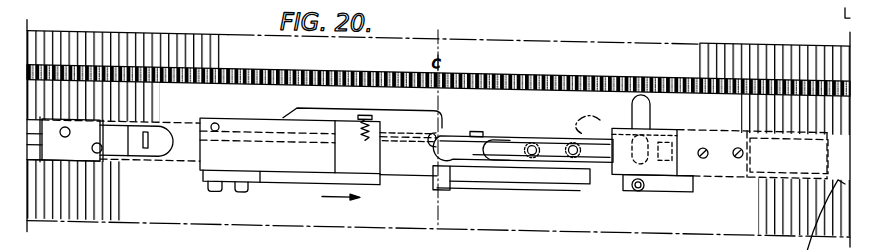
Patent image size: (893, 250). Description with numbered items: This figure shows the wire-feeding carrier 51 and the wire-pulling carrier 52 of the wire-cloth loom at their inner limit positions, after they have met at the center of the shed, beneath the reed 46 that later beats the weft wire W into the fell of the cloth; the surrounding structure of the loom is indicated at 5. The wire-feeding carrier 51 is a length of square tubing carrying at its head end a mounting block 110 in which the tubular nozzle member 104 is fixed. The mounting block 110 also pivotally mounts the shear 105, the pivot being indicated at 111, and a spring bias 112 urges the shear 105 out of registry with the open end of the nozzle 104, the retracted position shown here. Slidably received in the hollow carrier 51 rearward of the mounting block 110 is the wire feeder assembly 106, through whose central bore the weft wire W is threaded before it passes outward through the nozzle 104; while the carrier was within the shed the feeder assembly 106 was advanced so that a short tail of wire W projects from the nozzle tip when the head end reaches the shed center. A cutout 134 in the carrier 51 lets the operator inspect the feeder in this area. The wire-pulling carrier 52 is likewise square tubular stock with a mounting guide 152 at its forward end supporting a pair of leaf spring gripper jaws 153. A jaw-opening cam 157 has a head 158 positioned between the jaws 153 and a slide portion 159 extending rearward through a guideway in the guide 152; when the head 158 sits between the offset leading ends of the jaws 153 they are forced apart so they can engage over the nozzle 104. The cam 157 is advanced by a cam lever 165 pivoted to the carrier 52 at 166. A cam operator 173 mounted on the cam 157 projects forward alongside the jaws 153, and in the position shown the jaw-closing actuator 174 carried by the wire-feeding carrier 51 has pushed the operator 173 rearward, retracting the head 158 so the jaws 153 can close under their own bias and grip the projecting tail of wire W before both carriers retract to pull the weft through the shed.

The frame 5 is at (695, 57).
The reed 46 is at (438, 65).
The wire-feeding carrier 51 is at (165, 173).
The wire-pulling carrier 52 is at (723, 166).
The nozzle member 104 is at (395, 150).
The shear 105 is at (436, 133).
The wire feeder assembly 106 is at (84, 136).
The mounting block 110 is at (332, 169).
The shear pivot 111 is at (217, 128).
The spring bias 112 is at (370, 118).
The cutout 134 is at (93, 164).
The mounting guide 152 is at (672, 120).
The gripper jaws 153 is at (488, 136).
The jaw-opening cam 157 is at (560, 155).
The cam head 158 is at (500, 149).
The slide portion 159 is at (787, 156).
The cam lever 165 is at (600, 117).
The lever pivot 166 is at (639, 184).
The cam operator 173 is at (486, 186).
The jaw-closing actuator 174 is at (393, 181).
The weft wire W is at (437, 154).